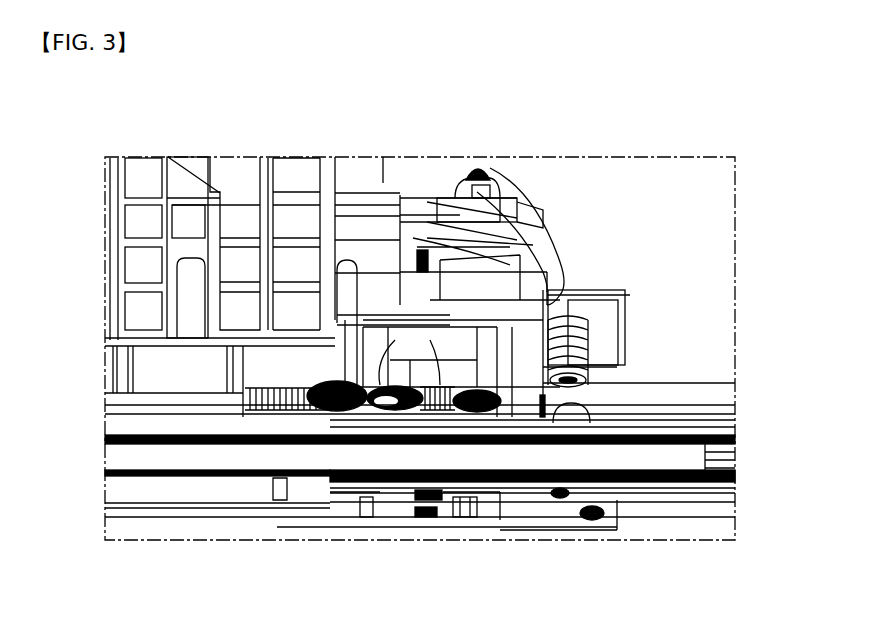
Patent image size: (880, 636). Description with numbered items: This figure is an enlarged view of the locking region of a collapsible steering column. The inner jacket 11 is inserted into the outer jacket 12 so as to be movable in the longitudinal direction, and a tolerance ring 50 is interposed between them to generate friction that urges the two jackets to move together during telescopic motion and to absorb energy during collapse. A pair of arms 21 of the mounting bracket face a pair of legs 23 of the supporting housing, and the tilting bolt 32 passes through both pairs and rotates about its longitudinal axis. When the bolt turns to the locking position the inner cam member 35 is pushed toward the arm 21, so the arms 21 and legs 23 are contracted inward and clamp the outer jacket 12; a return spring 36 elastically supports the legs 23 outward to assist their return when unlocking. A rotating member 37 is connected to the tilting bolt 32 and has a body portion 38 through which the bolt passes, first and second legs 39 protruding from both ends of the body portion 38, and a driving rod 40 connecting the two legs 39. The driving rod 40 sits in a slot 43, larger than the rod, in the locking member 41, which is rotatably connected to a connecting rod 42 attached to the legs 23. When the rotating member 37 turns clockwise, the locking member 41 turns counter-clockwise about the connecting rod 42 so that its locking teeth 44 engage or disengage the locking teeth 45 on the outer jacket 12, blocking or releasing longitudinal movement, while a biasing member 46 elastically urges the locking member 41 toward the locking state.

The inner jacket 11 is at (673, 395).
The outer jacket 12 is at (255, 348).
The arms 21 is at (528, 232).
The legs 23 is at (547, 300).
The tilting bolt 32 is at (512, 400).
The inner cam member 35 is at (483, 262).
The return spring 36 is at (545, 365).
The rotating member 37 is at (454, 305).
The body portion 38 is at (543, 400).
The first and second legs 39 is at (400, 347).
The driving rod 40 is at (368, 387).
The locking member 41 is at (375, 387).
The connecting rod 42 is at (333, 385).
The slot 43 is at (408, 413).
The locking teeth 44 is at (350, 413).
The locking teeth 45 is at (245, 400).
The biasing member 46 is at (280, 423).
The tolerance ring 50 is at (463, 417).